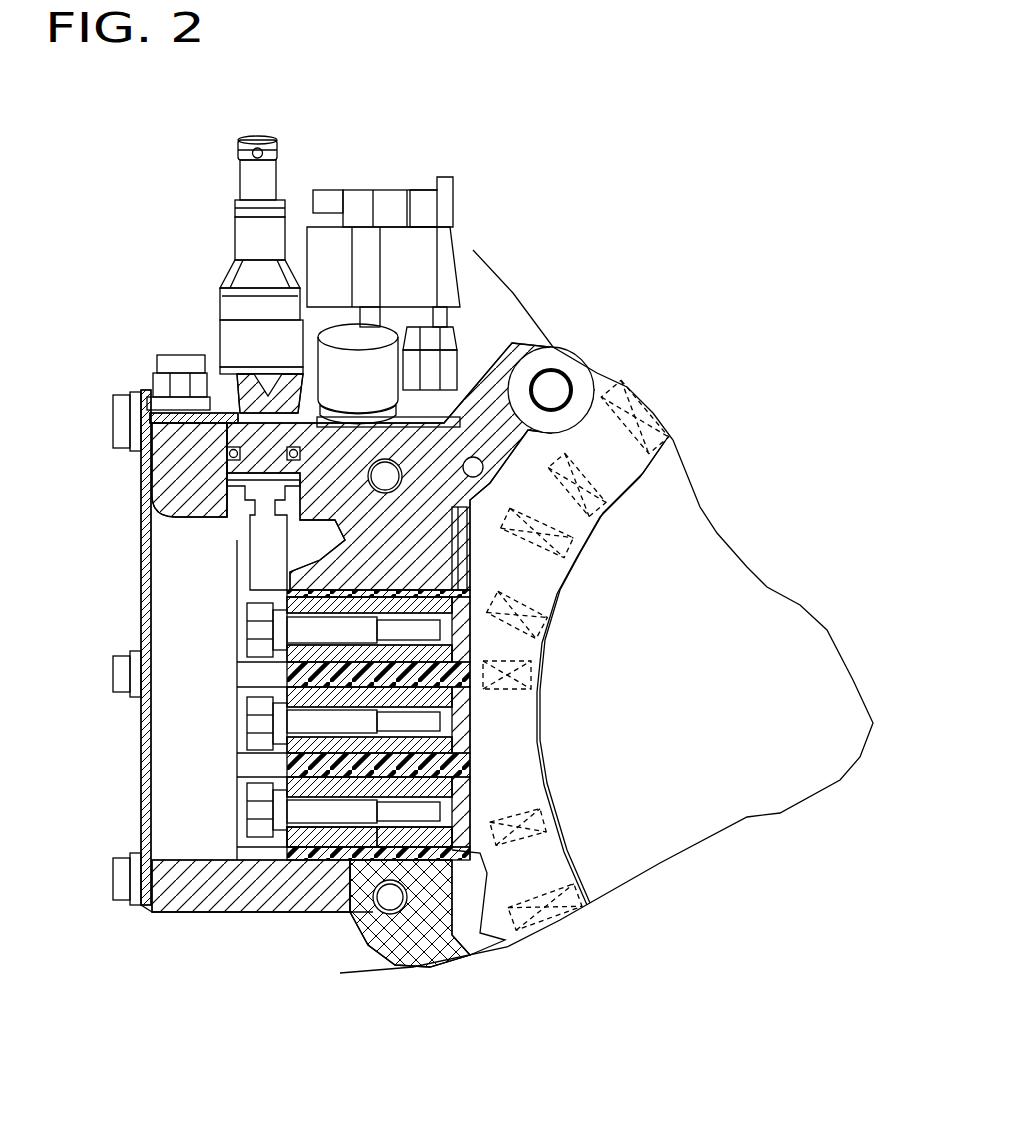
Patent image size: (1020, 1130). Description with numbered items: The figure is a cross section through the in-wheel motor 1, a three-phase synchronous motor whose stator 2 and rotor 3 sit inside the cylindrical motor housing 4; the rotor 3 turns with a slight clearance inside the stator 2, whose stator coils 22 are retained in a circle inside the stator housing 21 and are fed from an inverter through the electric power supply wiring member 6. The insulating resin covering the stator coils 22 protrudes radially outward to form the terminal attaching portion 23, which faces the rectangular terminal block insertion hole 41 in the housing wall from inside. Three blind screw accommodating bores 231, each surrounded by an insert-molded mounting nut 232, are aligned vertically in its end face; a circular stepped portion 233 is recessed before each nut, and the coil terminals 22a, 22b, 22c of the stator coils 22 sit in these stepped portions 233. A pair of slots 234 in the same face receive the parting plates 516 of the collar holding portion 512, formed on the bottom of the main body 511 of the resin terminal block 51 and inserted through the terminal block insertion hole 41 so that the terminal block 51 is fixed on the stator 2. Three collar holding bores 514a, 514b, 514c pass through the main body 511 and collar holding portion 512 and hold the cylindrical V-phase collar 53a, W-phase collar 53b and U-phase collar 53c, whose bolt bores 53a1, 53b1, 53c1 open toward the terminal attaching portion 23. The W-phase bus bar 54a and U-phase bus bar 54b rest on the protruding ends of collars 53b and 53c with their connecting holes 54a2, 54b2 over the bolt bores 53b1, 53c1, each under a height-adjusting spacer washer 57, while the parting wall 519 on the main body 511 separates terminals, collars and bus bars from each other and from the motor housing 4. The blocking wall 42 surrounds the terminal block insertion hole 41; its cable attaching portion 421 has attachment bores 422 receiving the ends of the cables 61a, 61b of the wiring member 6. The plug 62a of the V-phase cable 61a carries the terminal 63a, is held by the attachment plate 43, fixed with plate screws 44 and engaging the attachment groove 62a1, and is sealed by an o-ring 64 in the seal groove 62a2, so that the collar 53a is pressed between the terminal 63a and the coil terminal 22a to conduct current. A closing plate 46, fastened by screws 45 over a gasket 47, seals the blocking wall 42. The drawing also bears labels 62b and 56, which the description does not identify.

The in-wheel motor 1 is at (554, 97).
The stator 2 is at (606, 594).
The rotor 3 is at (708, 393).
The motor housing 4 is at (410, 509).
The electric power supply wiring member 6 is at (221, 337).
The stator housing 21 is at (552, 327).
The stator coils 22 is at (576, 604).
The V-phase coil terminal 22a is at (583, 681).
The coil terminal 22b is at (683, 767).
The coil terminal 22c is at (624, 832).
The terminal attaching portion 23 is at (548, 570).
The screw accommodating bores 231 is at (553, 601).
The mounting nuts 232 is at (570, 630).
The stepped portion 233 is at (584, 889).
The slots 234 is at (840, 811).
The terminal block insertion hole 41 is at (401, 963).
The blocking wall 42 is at (251, 969).
The attachment plate 43 is at (152, 365).
The plate screws 44 is at (152, 317).
The screws 45 is at (100, 919).
The closing plate 46 is at (109, 973).
The gasket 47 is at (137, 718).
The terminal block 51 is at (534, 383).
The V-phase collar 53a is at (270, 592).
The bolt bore 53a1 is at (175, 629).
The W-phase collar 53b is at (262, 696).
The bolt bore 53b1 is at (261, 732).
The U-phase collar 53c is at (412, 930).
The bolt bore 53c1 is at (332, 923).
The W-phase bus bar 54a is at (179, 810).
The connecting hole 54a2 is at (168, 723).
The U-phase bus bar 54b is at (316, 896).
The connecting hole 54b2 is at (92, 879).
The washer 56 is at (188, 633).
The spacer washer 57 is at (216, 874).
The V-phase cable 61a is at (309, 142).
The cable 61b is at (189, 123).
The plug 62a is at (226, 329).
The attachment groove 62a1 is at (93, 421).
The seal groove 62a2 is at (99, 423).
The valve upper body 62b is at (225, 227).
The terminal 63a is at (181, 535).
The o-ring 64 is at (158, 446).
The cable attaching portion 421 is at (142, 502).
The attachment bores 422 is at (152, 470).
The main body 511 is at (262, 951).
The collar holding portion 512 is at (462, 954).
The V-phase collar holding bore 514a is at (254, 671).
The W-phase collar holding bore 514b is at (261, 841).
The U-phase collar holding bore 514c is at (361, 919).
The parting plates 516 is at (593, 718).
The parting wall 519 is at (280, 775).